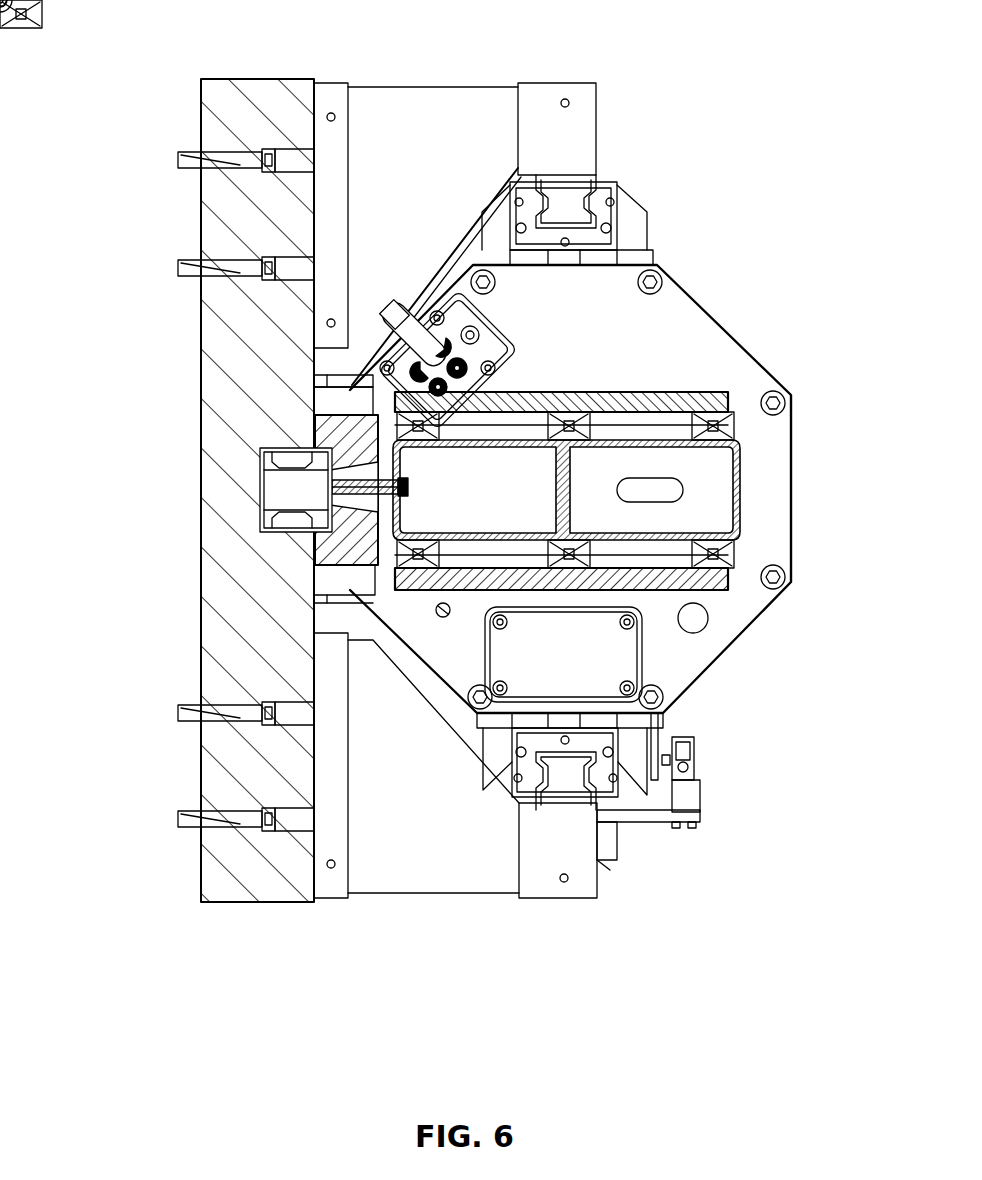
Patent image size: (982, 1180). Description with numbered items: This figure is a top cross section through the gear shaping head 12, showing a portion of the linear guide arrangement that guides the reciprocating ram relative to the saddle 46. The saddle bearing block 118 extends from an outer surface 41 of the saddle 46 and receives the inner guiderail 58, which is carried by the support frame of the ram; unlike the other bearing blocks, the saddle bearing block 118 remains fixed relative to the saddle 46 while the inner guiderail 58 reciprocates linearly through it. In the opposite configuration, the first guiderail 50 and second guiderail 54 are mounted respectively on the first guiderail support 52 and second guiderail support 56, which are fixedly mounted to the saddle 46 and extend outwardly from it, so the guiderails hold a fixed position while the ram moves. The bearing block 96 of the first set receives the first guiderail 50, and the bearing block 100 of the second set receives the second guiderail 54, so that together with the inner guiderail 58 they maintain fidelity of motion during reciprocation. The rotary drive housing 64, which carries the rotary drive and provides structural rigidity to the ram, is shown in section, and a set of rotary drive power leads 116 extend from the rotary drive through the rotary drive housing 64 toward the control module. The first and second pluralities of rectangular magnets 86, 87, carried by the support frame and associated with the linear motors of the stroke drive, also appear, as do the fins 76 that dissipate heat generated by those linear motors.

The gear shaping head 12 is at (425, 985).
The outer surface 41 is at (318, 840).
The saddle 46 is at (215, 212).
The first guiderail 50 is at (580, 800).
The first guiderail support 52 is at (556, 890).
The second guiderail 54 is at (585, 187).
The second guiderail support 56 is at (551, 108).
The inner guiderail 58 is at (326, 488).
The rotary drive housing 64 is at (682, 292).
The fins 76 is at (685, 415).
The first plurality of rectangular magnets 86 is at (737, 583).
The second plurality of rectangular magnets 87 is at (735, 418).
The bearing block 96 is at (612, 770).
The bearing block 100 is at (610, 225).
The rotary drive power leads 116 is at (408, 315).
The saddle bearing block 118 is at (352, 415).